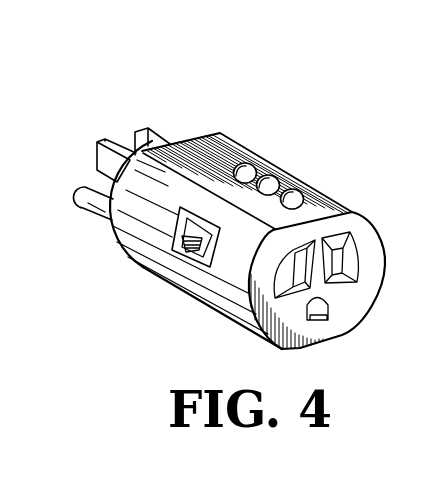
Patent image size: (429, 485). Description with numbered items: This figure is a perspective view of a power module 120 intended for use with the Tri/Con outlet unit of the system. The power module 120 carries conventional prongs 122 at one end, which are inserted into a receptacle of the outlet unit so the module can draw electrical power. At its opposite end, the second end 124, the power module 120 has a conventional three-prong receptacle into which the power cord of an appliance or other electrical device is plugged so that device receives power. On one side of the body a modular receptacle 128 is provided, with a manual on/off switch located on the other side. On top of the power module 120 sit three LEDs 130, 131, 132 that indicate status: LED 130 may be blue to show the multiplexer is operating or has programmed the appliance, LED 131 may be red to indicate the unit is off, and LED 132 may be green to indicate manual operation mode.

The power module 120 is at (105, 103).
The prongs 122 is at (143, 130).
The second end 124 is at (355, 302).
The modular receptacle 128 is at (176, 241).
The LED 130 is at (247, 170).
The LED 131 is at (273, 185).
The LED 132 is at (294, 200).